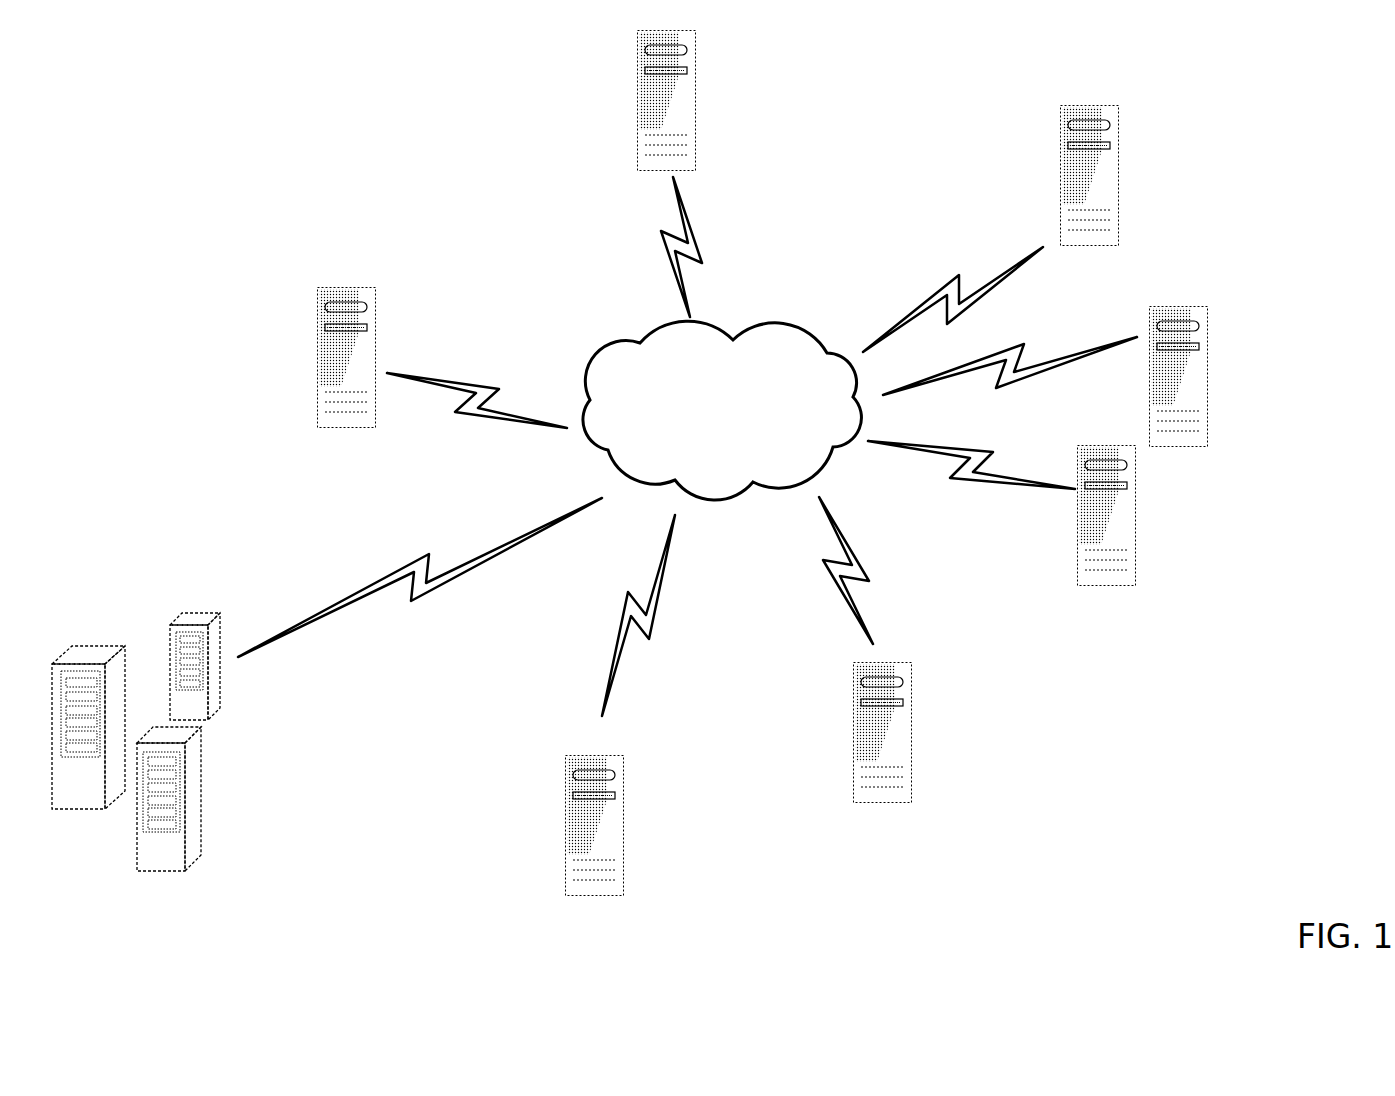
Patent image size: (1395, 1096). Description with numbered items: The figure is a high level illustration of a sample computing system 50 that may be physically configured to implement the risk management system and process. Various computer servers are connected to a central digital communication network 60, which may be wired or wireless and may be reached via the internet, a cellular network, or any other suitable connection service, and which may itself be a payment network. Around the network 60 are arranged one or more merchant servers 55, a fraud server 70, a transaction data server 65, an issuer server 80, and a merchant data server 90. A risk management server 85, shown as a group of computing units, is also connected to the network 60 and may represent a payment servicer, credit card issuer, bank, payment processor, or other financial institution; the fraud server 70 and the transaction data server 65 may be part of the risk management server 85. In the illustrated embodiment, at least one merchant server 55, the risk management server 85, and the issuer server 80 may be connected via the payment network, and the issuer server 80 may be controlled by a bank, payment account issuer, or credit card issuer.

The computing system 50 is at (392, 154).
The merchant server 55 is at (1067, 175).
The digital communication network 60 is at (738, 417).
The transaction data server 65 is at (655, 106).
The fraud server 70 is at (333, 363).
The issuer server 80 is at (611, 826).
The risk management server 85 is at (213, 793).
The merchant data server 90 is at (900, 733).